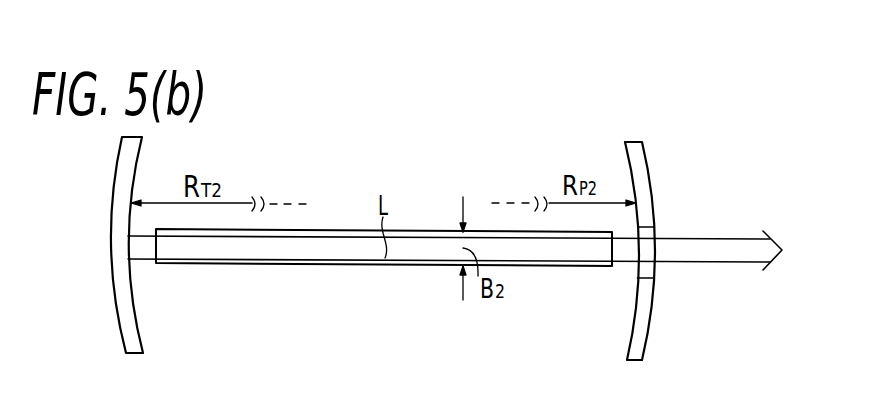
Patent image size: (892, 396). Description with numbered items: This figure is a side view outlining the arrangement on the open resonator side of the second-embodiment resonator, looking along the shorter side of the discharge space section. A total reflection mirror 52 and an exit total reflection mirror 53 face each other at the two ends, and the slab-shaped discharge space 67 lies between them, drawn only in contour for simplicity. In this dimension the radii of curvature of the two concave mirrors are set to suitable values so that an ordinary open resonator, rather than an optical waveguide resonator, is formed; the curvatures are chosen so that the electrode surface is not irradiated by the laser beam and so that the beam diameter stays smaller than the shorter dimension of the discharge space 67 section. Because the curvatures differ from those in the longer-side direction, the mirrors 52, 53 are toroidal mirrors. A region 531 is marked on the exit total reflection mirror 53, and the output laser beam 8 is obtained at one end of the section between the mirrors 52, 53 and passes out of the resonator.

The total reflection mirror 52 is at (121, 159).
The exit total reflection mirror 53 is at (643, 174).
The partially reflective region of mirror 53 531 is at (655, 232).
The discharge space 67 is at (432, 238).
The output laser beam 8 is at (688, 264).